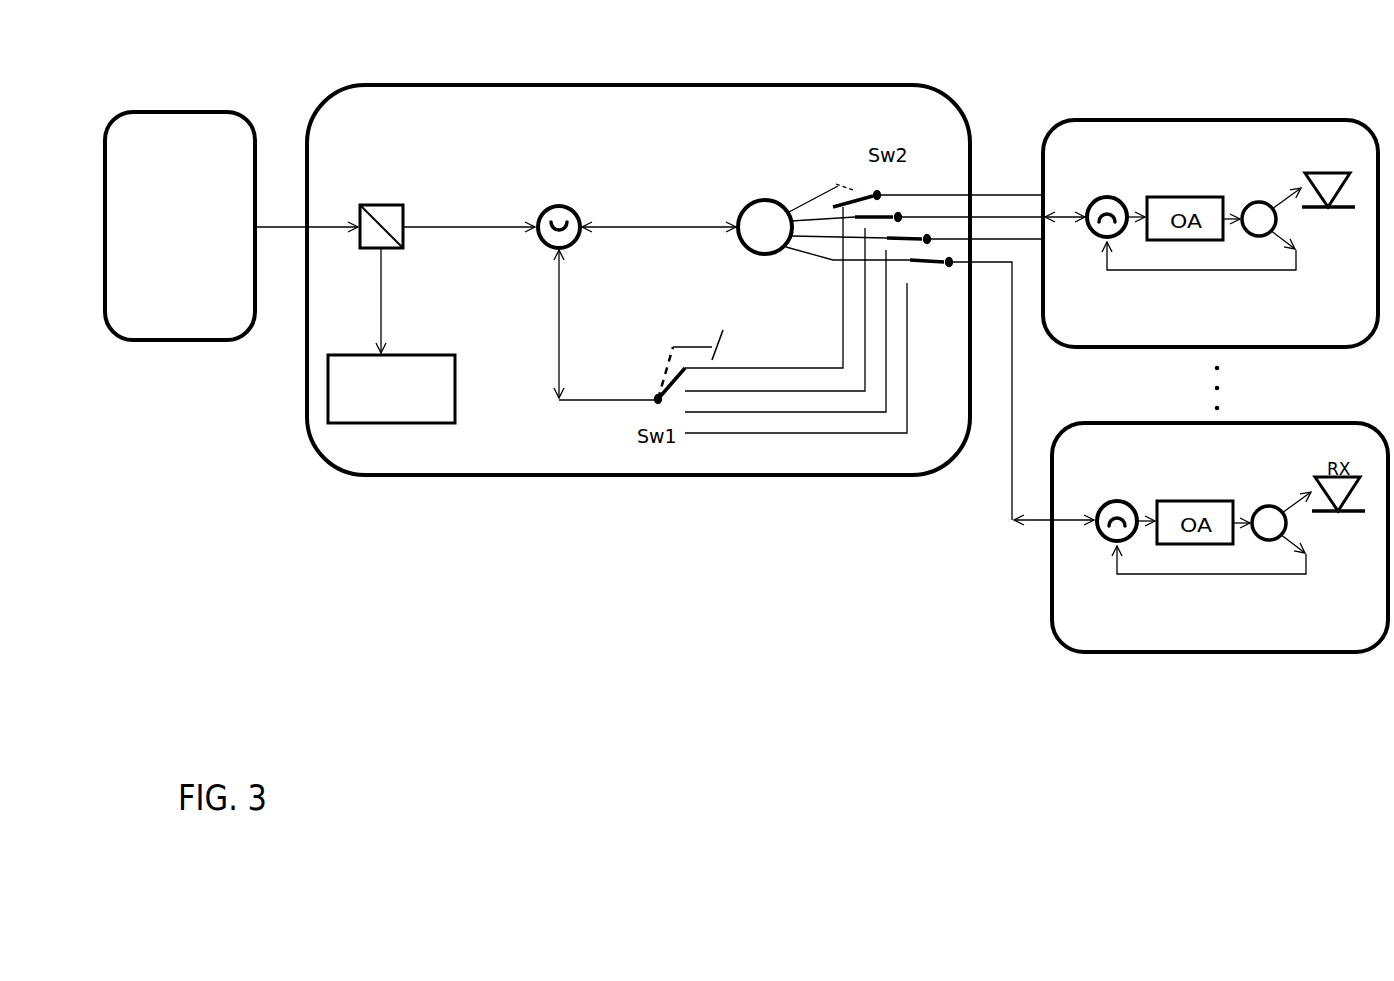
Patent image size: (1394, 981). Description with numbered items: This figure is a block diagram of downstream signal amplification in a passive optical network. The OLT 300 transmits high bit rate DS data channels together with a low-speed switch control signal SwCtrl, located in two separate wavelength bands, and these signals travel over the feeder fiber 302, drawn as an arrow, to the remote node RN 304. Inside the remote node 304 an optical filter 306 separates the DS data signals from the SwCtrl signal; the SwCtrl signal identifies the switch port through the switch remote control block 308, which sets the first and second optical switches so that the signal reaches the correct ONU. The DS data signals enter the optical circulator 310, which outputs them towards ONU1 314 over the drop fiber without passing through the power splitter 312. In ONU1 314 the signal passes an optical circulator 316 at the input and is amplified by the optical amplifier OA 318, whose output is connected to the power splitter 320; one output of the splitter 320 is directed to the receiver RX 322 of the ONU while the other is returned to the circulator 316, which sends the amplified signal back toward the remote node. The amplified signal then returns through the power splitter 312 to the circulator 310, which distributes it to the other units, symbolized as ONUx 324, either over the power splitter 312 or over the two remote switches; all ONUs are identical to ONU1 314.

The OLT 300 is at (176, 112).
The feeder fiber 302 is at (277, 215).
The remote node 304 is at (422, 84).
The optical filter 306 is at (365, 252).
The switch remote control (SwRC) 308 is at (441, 355).
The optical circulator 310 is at (560, 205).
The power splitter 312 is at (762, 200).
The ONU1 314 is at (1088, 120).
The optical circulator 316 is at (1112, 198).
The optical amplifier 318 is at (1190, 271).
The power splitter 320 is at (1245, 205).
The receiver (RX) 322 is at (1343, 210).
The ONUx 324 is at (1052, 612).